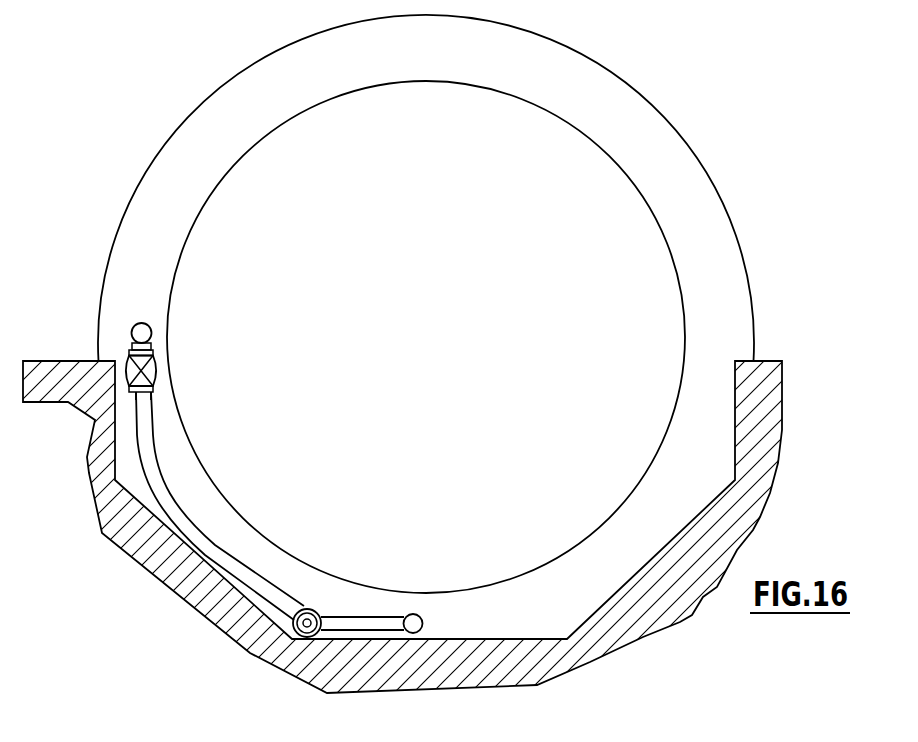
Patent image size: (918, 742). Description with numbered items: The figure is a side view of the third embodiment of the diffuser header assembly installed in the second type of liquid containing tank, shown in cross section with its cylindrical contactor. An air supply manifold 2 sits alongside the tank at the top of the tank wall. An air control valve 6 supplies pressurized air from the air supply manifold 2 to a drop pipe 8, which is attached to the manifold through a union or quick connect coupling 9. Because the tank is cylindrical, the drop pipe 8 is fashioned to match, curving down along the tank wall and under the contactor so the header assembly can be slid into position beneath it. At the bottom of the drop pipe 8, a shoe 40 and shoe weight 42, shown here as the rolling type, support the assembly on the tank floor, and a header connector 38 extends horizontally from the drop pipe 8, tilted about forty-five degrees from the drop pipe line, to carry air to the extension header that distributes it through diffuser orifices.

The air supply manifold 2 is at (145, 325).
The air control valve 6 is at (150, 370).
The union or quick connect coupling 9 is at (146, 393).
The drop pipe 8 is at (240, 552).
The shoe 40 is at (308, 608).
The shoe weight 42 is at (317, 612).
The header connector 38 is at (396, 616).